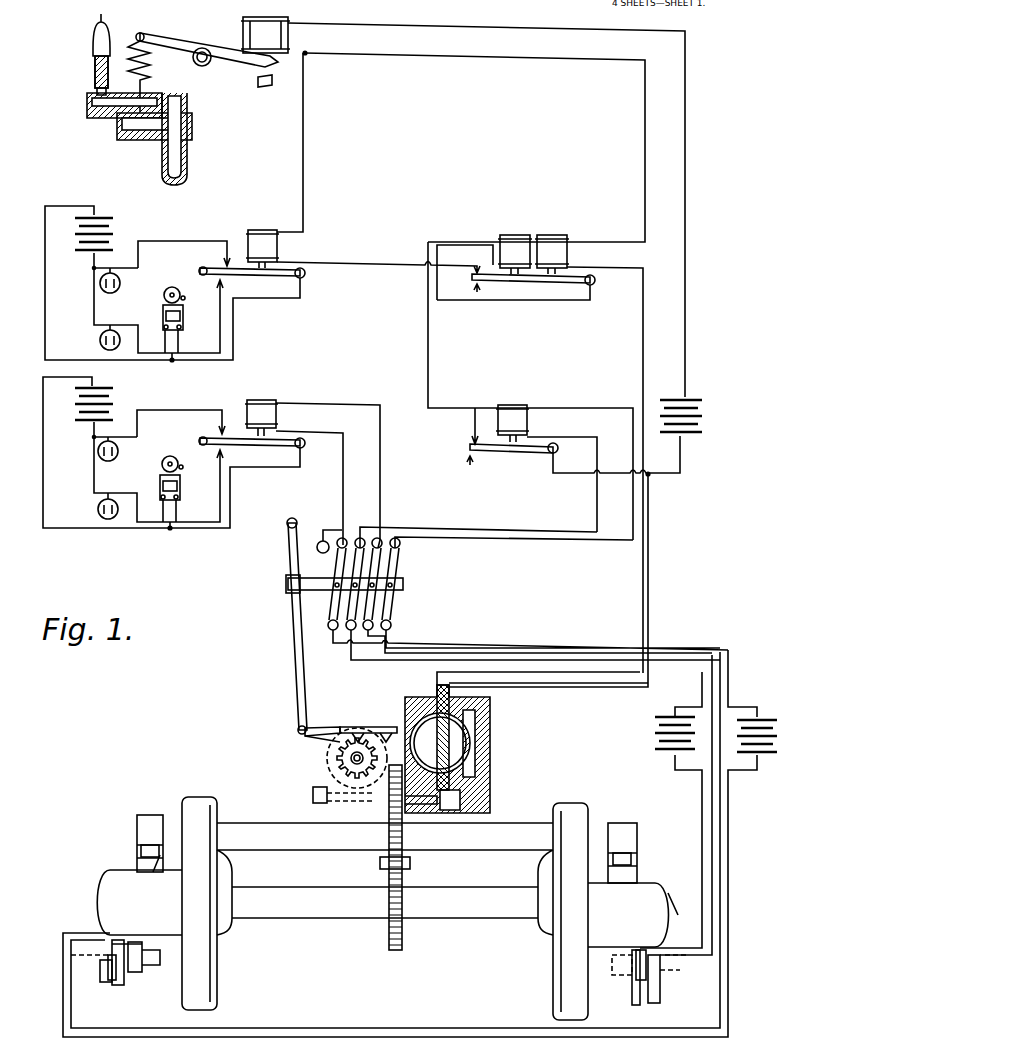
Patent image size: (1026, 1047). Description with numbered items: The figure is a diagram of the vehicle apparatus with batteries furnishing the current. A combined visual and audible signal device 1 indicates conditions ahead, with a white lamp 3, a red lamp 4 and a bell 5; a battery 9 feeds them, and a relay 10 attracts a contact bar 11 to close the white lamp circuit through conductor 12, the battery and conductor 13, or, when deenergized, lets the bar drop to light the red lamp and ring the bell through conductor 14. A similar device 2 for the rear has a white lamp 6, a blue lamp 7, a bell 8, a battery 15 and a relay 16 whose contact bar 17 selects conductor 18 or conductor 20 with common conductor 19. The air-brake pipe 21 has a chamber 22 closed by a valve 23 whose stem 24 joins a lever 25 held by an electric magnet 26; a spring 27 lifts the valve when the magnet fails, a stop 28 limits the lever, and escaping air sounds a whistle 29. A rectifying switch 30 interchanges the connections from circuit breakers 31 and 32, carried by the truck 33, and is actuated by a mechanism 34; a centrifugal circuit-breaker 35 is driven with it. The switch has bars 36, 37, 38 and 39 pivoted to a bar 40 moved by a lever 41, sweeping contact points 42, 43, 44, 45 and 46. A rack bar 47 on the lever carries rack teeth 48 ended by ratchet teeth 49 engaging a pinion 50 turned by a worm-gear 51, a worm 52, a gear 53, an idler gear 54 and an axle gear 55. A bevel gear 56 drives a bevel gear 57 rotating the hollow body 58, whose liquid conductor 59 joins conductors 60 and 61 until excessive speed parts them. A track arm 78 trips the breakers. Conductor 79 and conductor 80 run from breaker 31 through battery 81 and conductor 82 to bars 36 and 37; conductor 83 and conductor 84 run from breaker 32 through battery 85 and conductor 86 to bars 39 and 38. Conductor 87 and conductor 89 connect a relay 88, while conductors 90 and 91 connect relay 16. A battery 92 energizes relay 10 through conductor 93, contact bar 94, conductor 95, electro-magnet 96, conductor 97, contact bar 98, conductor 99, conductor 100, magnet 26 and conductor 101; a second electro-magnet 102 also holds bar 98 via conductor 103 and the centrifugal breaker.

The combined visual and audible signal device 1 is at (245, 315).
The signal device 2 is at (243, 495).
The white lamp 3 is at (99, 283).
The red lamp 4 is at (99, 340).
The bell 5 is at (172, 287).
The white lamp 6 is at (97, 451).
The blue lamp 7 is at (97, 509).
The bell 8 is at (170, 456).
The battery 9 is at (104, 218).
The relay 10 is at (262, 230).
The contact bar 11 is at (262, 280).
The conductor 12 is at (160, 241).
The conductor 13 is at (45, 296).
The conductor 14 is at (220, 320).
The battery 15 is at (113, 392).
The relay 16 is at (262, 400).
The contact bar 17 is at (248, 446).
The conductor 18 is at (160, 410).
The conductor 19 is at (43, 466).
The conductor 20 is at (220, 488).
The air-brake pipe 21 is at (187, 160).
The chamber 22 is at (192, 128).
The valve 23 is at (118, 120).
The valve stem 24 is at (137, 37).
The lever 25 is at (180, 47).
The electric magnet 26 is at (288, 34).
The spring 27 is at (150, 77).
The stop 28 is at (266, 88).
The whistle 29 is at (95, 78).
The rectifying switch 30 is at (405, 563).
The circuit breaker 31 is at (136, 960).
The circuit breaker 32 is at (632, 985).
The truck 33 is at (530, 950).
The switch-actuating mechanism 34 is at (320, 760).
The centrifugal circuit-breaker 35 is at (492, 760).
The bar 36 is at (330, 616).
The bar 37 is at (385, 600).
The bar 38 is at (360, 572).
The bar 39 is at (380, 608).
The bar 40 is at (270, 602).
The lever 41 is at (300, 648).
The contact point 42 is at (343, 538).
The contact point 43 is at (362, 538).
The middle contact point 44 is at (379, 538).
The contact point 45 is at (398, 538).
The contact point 46 is at (323, 530).
The rack bar 47 is at (316, 728).
The rack teeth 48 is at (365, 728).
The ratchet teeth 49 is at (355, 733).
The pinion 50 is at (345, 768).
The worm-gear 51 is at (325, 752).
The worm 52 is at (330, 798).
The gear 53 is at (388, 790).
The idler gear 54 is at (410, 868).
The gear 55 is at (395, 948).
The bevel gear 56 is at (455, 812).
The bevel gear 57 is at (480, 800).
The hollow body 58 is at (470, 745).
The liquid electrical conducting material 59 is at (470, 722).
The conductor 60 is at (580, 688).
The conductor 61 is at (548, 680).
The arm 78 is at (90, 960).
The conductor 79 is at (588, 658).
The conductor 80 is at (63, 935).
The battery 81 is at (760, 716).
The conductor 82 is at (540, 652).
The conductor 83 is at (552, 645).
The conductor 84 is at (700, 838).
The battery 85 is at (655, 740).
The conductor 86 is at (505, 640).
The conductor 87 is at (520, 537).
The relay 88 is at (518, 405).
The conductor 89 is at (488, 525).
The conductor 90 is at (343, 460).
The conductor 91 is at (382, 458).
The battery 92 is at (703, 398).
The conductor 93 is at (680, 466).
The contact bar 94 is at (490, 450).
The conductor 95 is at (429, 362).
The electro-magnet 96 is at (511, 235).
The conductor 97 is at (508, 302).
The contact bar 98 is at (572, 285).
The conductor 99 is at (372, 266).
The conductor 100 is at (305, 152).
The conductor 101 is at (462, 25).
The electro-magnet 102 is at (557, 235).
The conductor 103 is at (645, 118).